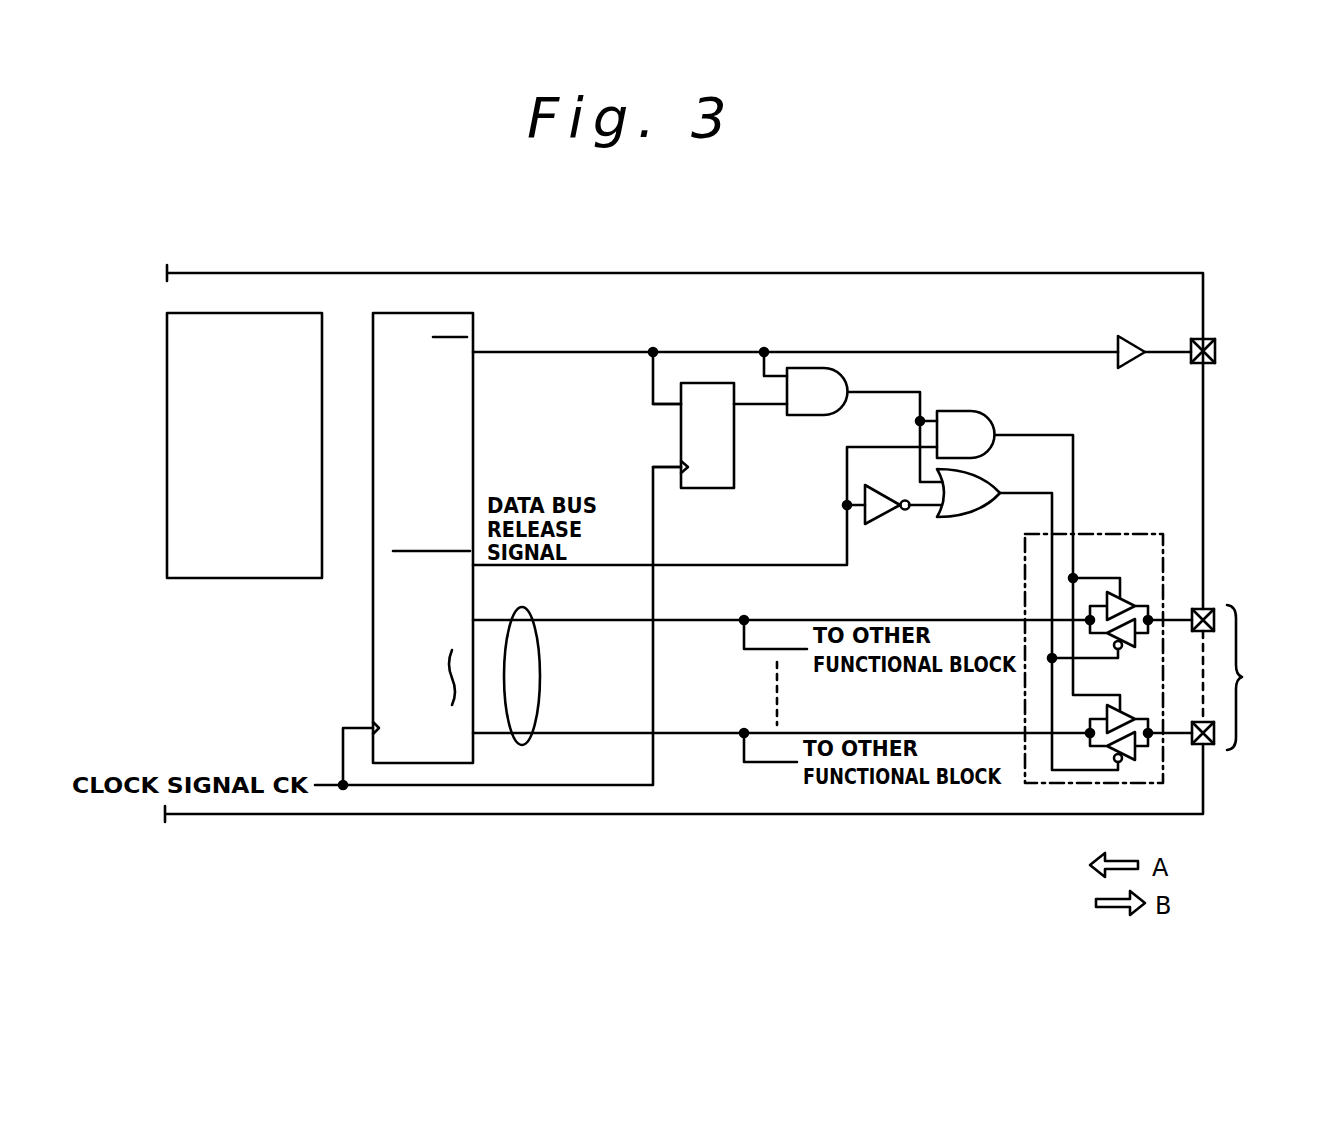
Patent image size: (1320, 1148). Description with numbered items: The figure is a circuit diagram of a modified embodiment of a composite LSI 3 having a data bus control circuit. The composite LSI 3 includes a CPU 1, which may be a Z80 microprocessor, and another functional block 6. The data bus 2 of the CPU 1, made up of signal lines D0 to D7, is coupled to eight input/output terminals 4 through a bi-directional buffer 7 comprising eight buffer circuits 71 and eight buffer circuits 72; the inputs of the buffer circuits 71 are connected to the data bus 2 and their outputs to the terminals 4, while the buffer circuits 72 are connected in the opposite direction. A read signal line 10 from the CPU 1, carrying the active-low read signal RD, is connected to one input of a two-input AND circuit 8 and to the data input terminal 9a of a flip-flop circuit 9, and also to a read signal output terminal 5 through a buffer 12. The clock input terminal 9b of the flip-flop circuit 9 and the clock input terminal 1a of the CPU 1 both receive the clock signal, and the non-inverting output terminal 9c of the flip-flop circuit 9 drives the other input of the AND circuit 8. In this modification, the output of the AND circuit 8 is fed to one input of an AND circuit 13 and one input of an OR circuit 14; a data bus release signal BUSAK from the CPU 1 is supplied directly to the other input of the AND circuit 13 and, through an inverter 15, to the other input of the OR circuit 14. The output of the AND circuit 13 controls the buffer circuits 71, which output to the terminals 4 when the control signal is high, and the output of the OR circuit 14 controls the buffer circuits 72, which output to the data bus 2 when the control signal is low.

The CPU 1 is at (472, 323).
The clock input terminal 1a is at (373, 725).
The data bus 2 is at (541, 688).
The composite LSI 3 is at (1105, 273).
The input/output terminals 4 is at (1205, 677).
The read signal output terminal 5 is at (1218, 350).
The another functional block 6 is at (320, 326).
The bi-directional buffer 7 is at (1150, 533).
The AND circuit 8 is at (828, 410).
The flip-flop circuit 9 is at (733, 422).
The data input terminal 9a is at (678, 405).
The clock input terminal 9b is at (684, 482).
The non-inverting output terminal 9c is at (738, 404).
The read signal line 10 is at (944, 352).
The buffer 12 is at (1134, 348).
The AND circuit 13 is at (988, 422).
The OR circuit 14 is at (962, 519).
The inverter 15 is at (878, 522).
The buffer circuits 71 is at (1125, 600).
The buffer circuits 72 is at (1135, 652).